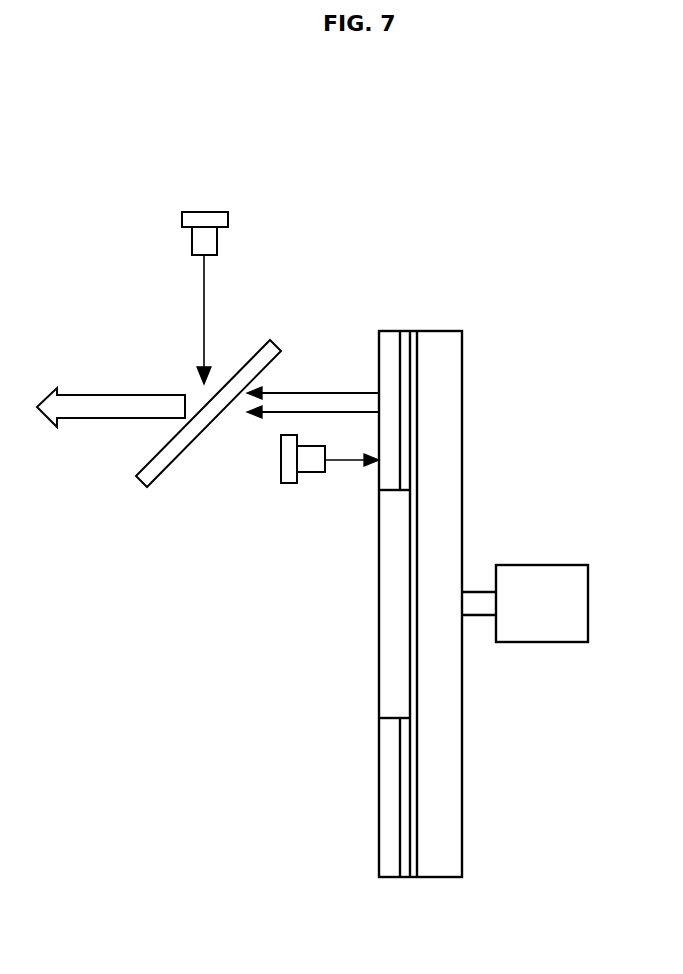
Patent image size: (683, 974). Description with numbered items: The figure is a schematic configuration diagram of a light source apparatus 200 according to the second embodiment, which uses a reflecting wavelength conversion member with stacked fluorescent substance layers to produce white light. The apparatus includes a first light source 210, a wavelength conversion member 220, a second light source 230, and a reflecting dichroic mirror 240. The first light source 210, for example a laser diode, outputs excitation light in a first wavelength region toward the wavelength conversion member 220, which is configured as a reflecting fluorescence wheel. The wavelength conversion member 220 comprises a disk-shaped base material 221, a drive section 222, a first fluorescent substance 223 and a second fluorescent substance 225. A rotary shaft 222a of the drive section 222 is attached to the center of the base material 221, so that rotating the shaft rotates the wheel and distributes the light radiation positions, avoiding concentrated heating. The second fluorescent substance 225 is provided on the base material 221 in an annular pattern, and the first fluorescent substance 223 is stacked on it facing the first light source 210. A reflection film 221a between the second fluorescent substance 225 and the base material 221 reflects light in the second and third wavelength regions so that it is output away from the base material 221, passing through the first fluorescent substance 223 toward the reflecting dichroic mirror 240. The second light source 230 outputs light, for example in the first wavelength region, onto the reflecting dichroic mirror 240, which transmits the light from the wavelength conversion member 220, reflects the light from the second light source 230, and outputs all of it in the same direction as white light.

The light source apparatus 200 is at (573, 188).
The first light source 210 is at (288, 485).
The wavelength conversion member 220 is at (462, 301).
The base material 221 is at (442, 868).
The reflection film 221a is at (413, 880).
The drive section 222 is at (565, 642).
The rotary shaft 222a is at (480, 616).
The first fluorescent substance 223 is at (392, 338).
The second fluorescent substance 225 is at (408, 338).
The second light source 230 is at (228, 218).
The reflecting dichroic mirror 240 is at (281, 346).